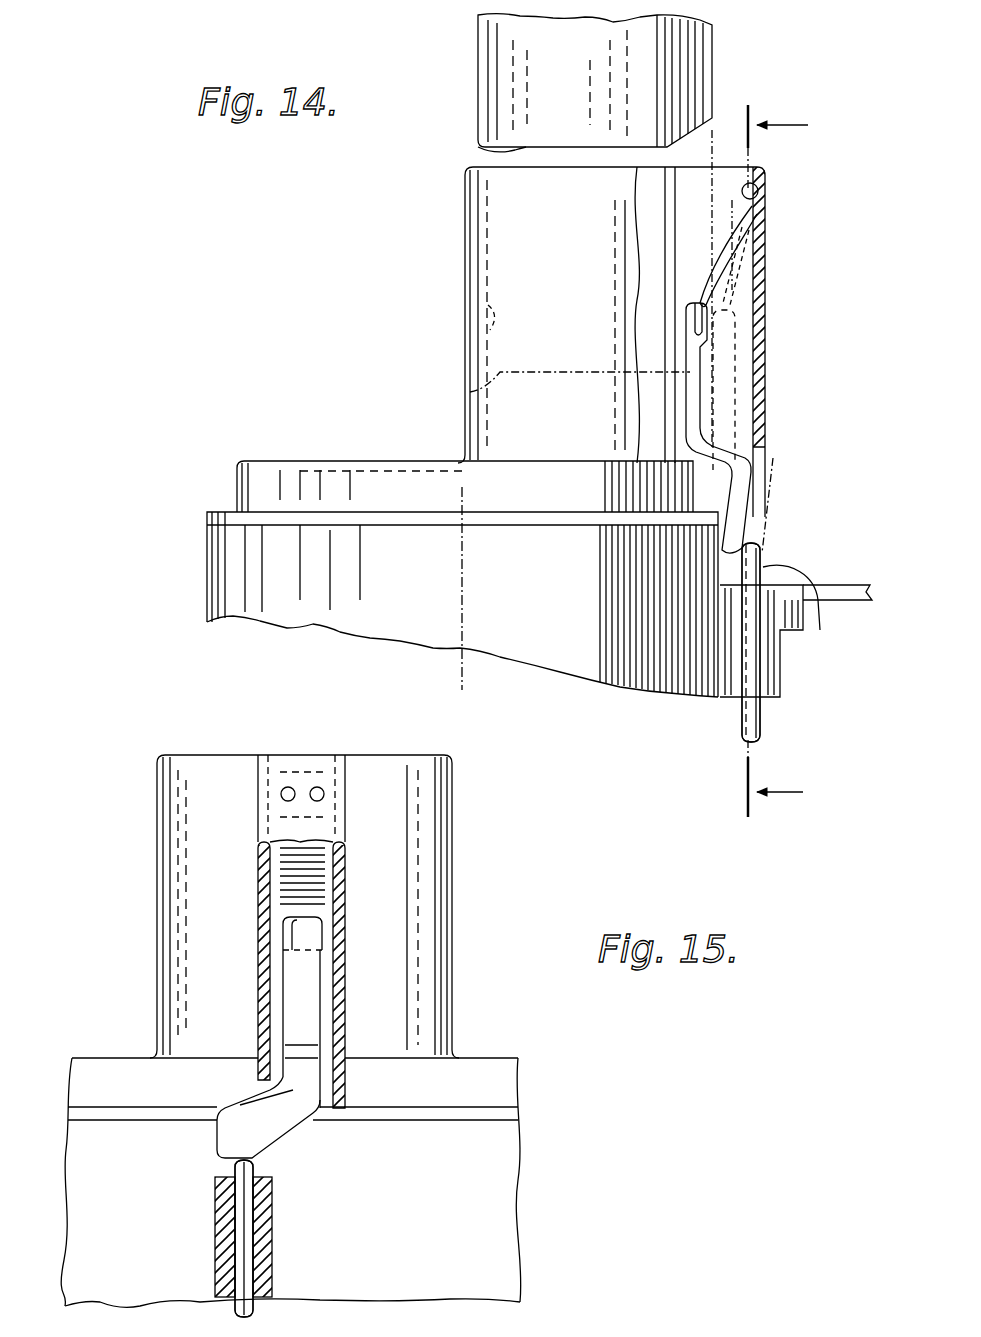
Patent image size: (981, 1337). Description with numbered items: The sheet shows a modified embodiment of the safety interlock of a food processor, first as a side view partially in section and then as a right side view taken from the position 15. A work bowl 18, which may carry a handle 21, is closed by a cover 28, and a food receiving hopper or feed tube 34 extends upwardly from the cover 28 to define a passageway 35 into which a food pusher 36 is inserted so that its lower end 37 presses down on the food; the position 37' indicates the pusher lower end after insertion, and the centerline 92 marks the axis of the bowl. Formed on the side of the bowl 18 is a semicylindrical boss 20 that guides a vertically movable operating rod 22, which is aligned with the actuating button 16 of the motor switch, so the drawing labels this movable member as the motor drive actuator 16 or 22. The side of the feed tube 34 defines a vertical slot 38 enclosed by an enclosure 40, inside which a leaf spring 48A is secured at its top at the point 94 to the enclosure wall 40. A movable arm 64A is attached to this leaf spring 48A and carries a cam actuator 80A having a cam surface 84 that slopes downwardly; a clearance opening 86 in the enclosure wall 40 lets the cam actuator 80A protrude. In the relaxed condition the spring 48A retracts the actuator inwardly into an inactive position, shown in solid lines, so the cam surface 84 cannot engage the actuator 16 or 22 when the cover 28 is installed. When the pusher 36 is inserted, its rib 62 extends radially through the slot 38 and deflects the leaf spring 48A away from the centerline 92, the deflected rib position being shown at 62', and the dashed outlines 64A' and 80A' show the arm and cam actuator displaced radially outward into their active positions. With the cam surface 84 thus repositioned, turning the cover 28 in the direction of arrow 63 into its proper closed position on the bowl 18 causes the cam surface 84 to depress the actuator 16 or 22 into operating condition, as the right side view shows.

In FIG. 14, the section position 15— 15 is at (794, 461).
In FIG. 14, the actuating button 16 is at (786, 642).
In FIG. 15, the actuating button 16 is at (247, 1253).
In FIG. 14, the work bowl 18 is at (198, 578).
In FIG. 15, the work bowl 18 is at (527, 1232).
In FIG. 14, the semicylindrical boss 20 is at (783, 680).
In FIG. 15, the semicylindrical boss 20 is at (215, 1262).
In FIG. 14, the handle 21 is at (825, 592).
In FIG. 14, the operating rod 22 is at (816, 642).
In FIG. 15, the operating rod 22 is at (314, 1238).
In FIG. 14, the cover 28 is at (300, 460).
In FIG. 15, the cover 28 is at (490, 1050).
In FIG. 14, the feed tube 34 is at (465, 258).
In FIG. 15, the feed tube 34 is at (452, 869).
In FIG. 14, the passageway 35 is at (488, 314).
In FIG. 14, the food pusher 36 is at (478, 43).
In FIG. 14, the lower end of the pusher 37 is at (464, 150).
In FIG. 14, the cap lip depressed position 37' is at (537, 380).
In FIG. 14, the vertical slot 38 is at (665, 205).
In FIG. 14, the enclosure 40 is at (765, 228).
In FIG. 15, the enclosure 40 is at (346, 908).
In FIG. 14, the leaf spring 48A is at (715, 263).
In FIG. 15, the leaf spring 48A is at (310, 873).
In FIG. 14, the rib 62 is at (738, 81).
In FIG. 14, the cap side face depressed position 62' is at (798, 290).
In FIG. 15, the arrow 63 is at (137, 1035).
In FIG. 14, the movable arm 64A is at (773, 408).
In FIG. 15, the movable arm 64A is at (340, 1029).
In FIG. 14, the displaced arm outline 64A' is at (788, 390).
In FIG. 14, the cam actuator 80A is at (798, 510).
In FIG. 15, the cam actuator 80A is at (320, 1120).
In FIG. 14, the displaced cam actuator outline 80A' is at (821, 505).
In FIG. 15, the cam surface 84 is at (280, 1145).
In FIG. 14, the clearance opening 86 is at (742, 460).
In FIG. 15, the clearance opening 86 is at (257, 1083).
In FIG. 14, the centerline 92 is at (462, 627).
In FIG. 14, the spring securing point 94 is at (770, 190).
In FIG. 15, the spring securing point 94 is at (288, 786).